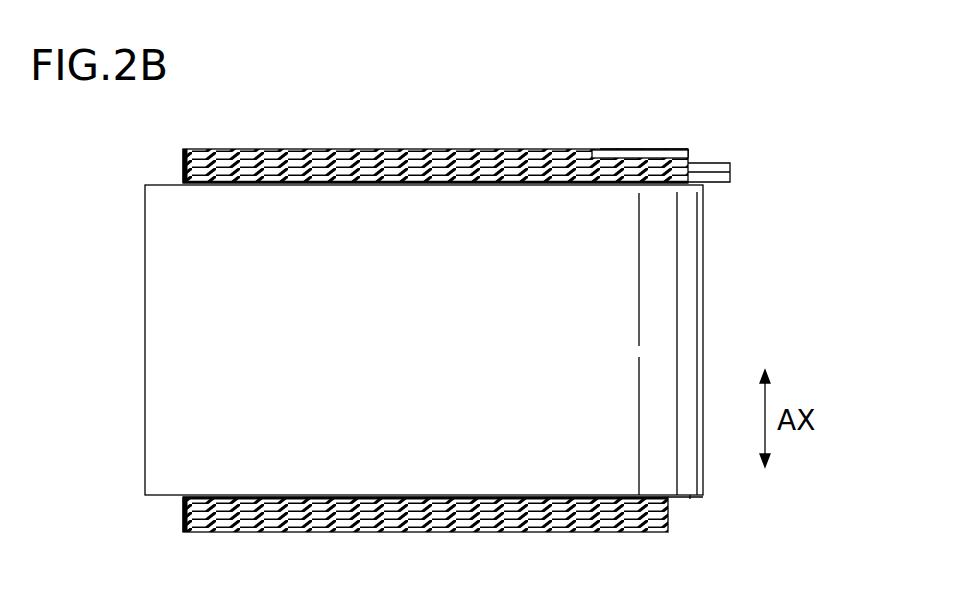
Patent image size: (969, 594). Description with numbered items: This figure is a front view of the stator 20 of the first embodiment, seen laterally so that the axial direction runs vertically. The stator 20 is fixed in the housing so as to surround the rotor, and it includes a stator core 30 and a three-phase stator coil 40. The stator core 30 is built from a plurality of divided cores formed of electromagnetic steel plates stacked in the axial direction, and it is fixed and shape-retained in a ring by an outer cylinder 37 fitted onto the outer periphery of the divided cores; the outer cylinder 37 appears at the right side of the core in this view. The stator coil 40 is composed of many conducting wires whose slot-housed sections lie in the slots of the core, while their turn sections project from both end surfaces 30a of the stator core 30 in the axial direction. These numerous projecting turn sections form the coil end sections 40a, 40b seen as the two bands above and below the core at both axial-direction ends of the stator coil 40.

The stator 20 is at (588, 124).
The stator core 30 is at (469, 335).
The end surface 30a is at (700, 185).
The outer cylinder 37 is at (683, 336).
The stator coil 40 is at (410, 130).
The coil end section 40a is at (183, 182).
The coil end section 40b is at (183, 500).